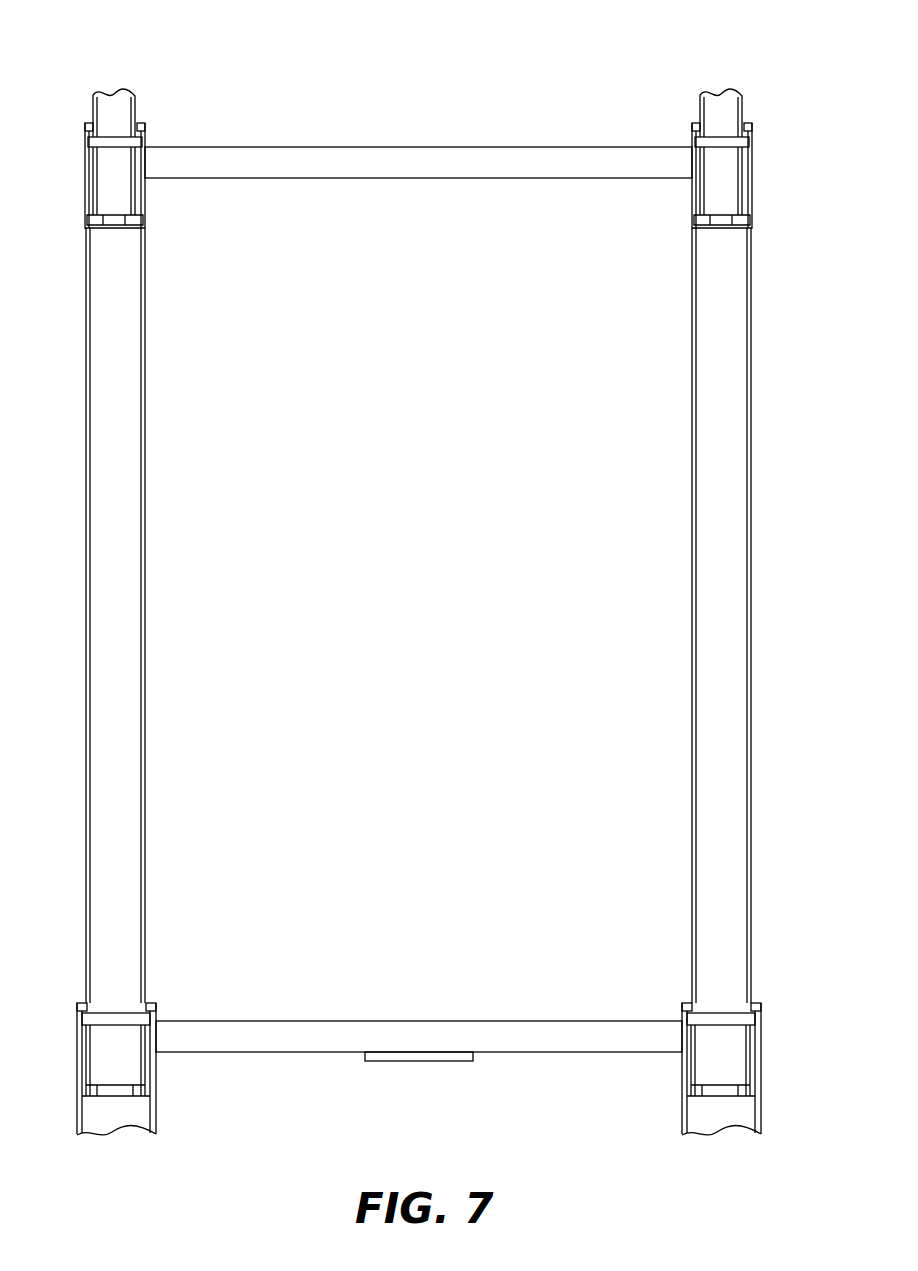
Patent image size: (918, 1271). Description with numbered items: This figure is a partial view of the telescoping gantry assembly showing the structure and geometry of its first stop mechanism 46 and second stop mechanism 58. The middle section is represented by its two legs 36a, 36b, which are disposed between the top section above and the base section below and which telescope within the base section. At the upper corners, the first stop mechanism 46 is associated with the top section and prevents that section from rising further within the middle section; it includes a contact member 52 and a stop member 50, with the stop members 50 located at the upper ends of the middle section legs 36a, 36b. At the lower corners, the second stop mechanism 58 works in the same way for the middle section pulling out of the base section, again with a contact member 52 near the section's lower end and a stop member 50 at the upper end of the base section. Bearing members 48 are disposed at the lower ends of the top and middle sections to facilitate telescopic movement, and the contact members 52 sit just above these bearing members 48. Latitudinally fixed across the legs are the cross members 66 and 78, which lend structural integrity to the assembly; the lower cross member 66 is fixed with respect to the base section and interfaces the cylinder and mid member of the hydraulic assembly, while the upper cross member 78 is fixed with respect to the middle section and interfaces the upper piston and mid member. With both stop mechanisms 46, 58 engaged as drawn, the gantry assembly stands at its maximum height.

The leg of the middle section 36a is at (145, 590).
The leg of the middle section 36b is at (692, 590).
The first stop mechanism 46 is at (73, 161).
The bearing member 48 is at (720, 227).
The stop member 50 is at (145, 124).
The contact member 52 is at (720, 135).
The second stop mechanism 58 is at (68, 1051).
The cross member 66 is at (428, 1021).
The cross member 78 is at (397, 178).